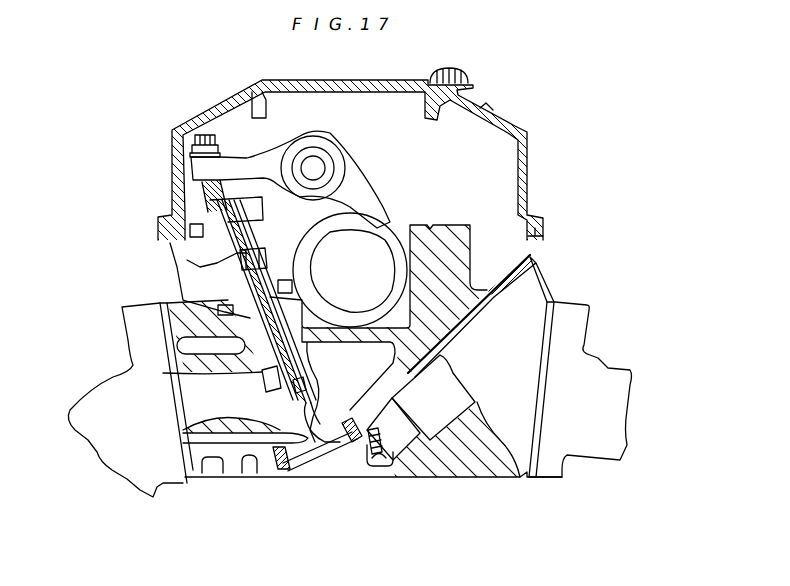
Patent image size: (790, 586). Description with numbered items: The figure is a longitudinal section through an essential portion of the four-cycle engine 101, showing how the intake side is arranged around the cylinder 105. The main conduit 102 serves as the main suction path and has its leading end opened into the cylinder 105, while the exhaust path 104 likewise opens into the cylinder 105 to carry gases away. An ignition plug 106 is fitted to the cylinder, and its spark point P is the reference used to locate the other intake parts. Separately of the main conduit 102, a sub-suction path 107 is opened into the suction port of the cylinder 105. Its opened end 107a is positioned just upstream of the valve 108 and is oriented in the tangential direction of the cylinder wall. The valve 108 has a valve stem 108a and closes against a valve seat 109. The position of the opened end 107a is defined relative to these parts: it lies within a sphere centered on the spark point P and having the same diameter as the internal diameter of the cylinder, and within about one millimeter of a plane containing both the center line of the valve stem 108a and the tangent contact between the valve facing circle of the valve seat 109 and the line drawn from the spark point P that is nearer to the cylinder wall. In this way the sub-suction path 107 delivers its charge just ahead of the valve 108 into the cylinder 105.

The four-cycle engine 101 is at (530, 136).
The main conduit 102 is at (183, 417).
The exhaust path 104 is at (593, 373).
The cylinder 105 is at (333, 468).
The ignition plug 106 is at (433, 466).
The sub-suction path 107 is at (227, 444).
The opened end 107a is at (286, 469).
The valve 108 is at (350, 445).
The valve stem 108a is at (170, 267).
The valve seat 109 is at (362, 455).
The spark point P is at (390, 458).